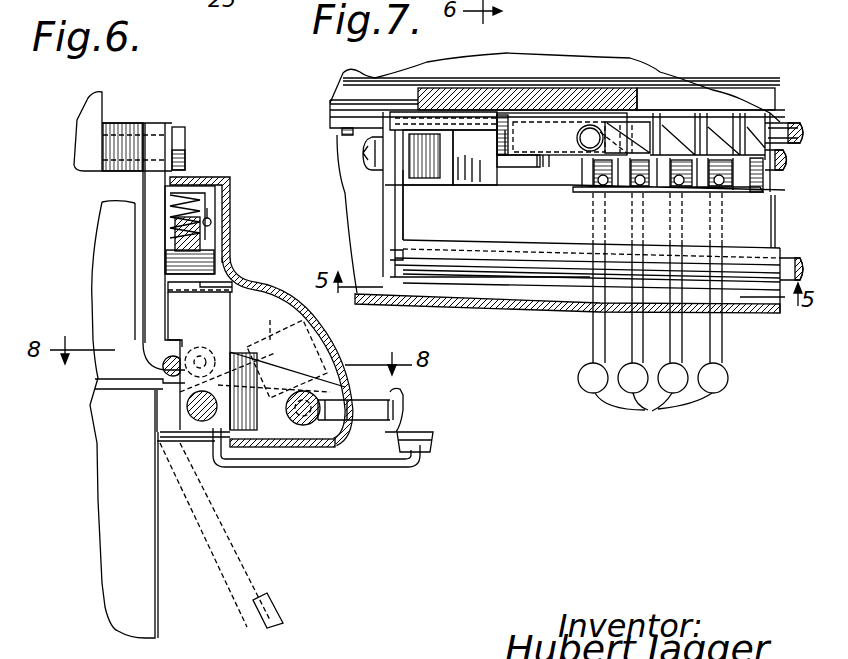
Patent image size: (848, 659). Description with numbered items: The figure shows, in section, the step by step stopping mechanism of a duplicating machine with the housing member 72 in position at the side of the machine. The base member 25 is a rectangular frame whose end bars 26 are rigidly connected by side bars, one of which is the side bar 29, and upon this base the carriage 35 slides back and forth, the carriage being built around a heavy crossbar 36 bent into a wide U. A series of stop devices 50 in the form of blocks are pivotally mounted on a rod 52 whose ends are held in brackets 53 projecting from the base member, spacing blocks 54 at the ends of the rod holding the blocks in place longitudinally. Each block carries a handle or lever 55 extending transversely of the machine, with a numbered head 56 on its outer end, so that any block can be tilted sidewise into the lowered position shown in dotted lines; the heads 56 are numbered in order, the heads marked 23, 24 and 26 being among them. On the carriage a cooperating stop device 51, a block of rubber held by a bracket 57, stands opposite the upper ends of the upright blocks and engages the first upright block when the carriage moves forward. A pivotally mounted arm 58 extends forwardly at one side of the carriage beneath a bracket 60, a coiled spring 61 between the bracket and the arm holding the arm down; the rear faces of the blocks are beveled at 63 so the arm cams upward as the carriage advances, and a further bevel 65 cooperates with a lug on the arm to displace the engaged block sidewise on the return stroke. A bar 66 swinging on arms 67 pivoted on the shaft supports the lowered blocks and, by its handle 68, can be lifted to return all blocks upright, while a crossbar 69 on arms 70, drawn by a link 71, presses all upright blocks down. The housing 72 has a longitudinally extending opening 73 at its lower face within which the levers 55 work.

In FIG. 7, the terminal 23 is at (713, 378).
In FIG. 7, the terminal 24 is at (673, 378).
In FIG. 6, the base member 25 is at (120, 498).
In FIG. 7, the base member 25 is at (633, 378).
In FIG. 7, the end bar 26 is at (593, 378).
In FIG. 6, the side bar 29 is at (115, 296).
In FIG. 6, the carriage 35 is at (108, 109).
In FIG. 6, the crossbar 36 is at (152, 233).
In FIG. 7, the crossbar 36 is at (484, 101).
In FIG. 6, the stop devices 50 is at (222, 318).
In FIG. 7, the stop devices 50 is at (730, 186).
In FIG. 7, the stop device 51 is at (558, 177).
In FIG. 6, the rod 52 is at (193, 388).
In FIG. 7, the rod 52 is at (775, 175).
In FIG. 6, the brackets 53 is at (165, 432).
In FIG. 7, the brackets 53 is at (330, 120).
In FIG. 7, the spacing blocks 54 is at (480, 180).
In FIG. 6, the handle or lever 55 is at (200, 508).
In FIG. 7, the handle or lever 55 is at (633, 341).
In FIG. 6, the numbered head 56 is at (432, 450).
In FIG. 7, the numbered head 56 is at (653, 412).
In FIG. 7, the bracket 57 is at (500, 177).
In FIG. 6, the arm 58 is at (165, 260).
In FIG. 7, the arm 58 is at (607, 128).
In FIG. 6, the bracket 60 is at (200, 190).
In FIG. 6, the coiled spring 61 is at (212, 206).
In FIG. 7, the coiled spring 61 is at (577, 141).
In FIG. 6, the bevel 63 is at (238, 282).
In FIG. 7, the bevel 63 is at (727, 133).
In FIG. 7, the bevel 65 is at (680, 140).
In FIG. 6, the bar 66 is at (305, 420).
In FIG. 7, the bar 66 is at (518, 263).
In FIG. 6, the arms 67 is at (275, 425).
In FIG. 7, the arms 67 is at (398, 209).
In FIG. 6, the handle 68 is at (395, 402).
In FIG. 7, the crossbar 69 is at (410, 122).
In FIG. 7, the arms 70 is at (363, 183).
In FIG. 6, the link 71 is at (290, 380).
In FIG. 6, the housing member 72 is at (268, 286).
In FIG. 7, the housing member 72 is at (533, 309).
In FIG. 6, the opening 73 is at (208, 450).
In FIG. 7, the opening 73 is at (775, 200).